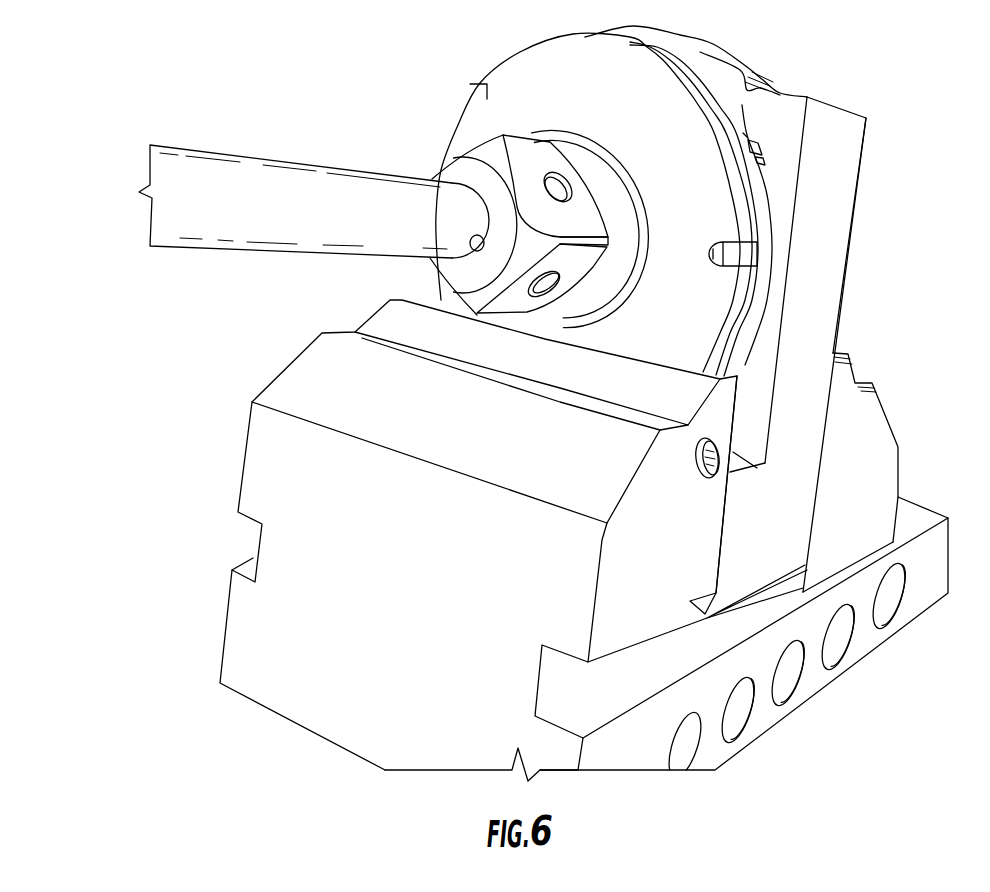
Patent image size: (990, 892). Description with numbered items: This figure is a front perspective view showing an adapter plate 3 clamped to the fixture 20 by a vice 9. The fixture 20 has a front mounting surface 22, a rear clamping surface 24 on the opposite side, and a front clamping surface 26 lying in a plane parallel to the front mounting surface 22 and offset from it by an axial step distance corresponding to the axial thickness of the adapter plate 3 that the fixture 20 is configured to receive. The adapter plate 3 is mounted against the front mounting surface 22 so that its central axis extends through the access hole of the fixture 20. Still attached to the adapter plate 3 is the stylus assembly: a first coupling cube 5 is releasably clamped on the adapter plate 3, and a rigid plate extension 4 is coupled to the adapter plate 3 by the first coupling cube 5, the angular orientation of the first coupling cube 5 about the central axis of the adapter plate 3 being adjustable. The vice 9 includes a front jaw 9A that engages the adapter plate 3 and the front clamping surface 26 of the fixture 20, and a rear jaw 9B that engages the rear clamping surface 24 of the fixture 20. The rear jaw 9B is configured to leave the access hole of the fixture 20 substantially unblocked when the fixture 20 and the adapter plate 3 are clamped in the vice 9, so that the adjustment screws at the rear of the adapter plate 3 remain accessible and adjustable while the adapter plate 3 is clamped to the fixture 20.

The adapter plate 3 is at (532, 68).
The plate extension 4 is at (303, 167).
The first coupling cube 5 is at (477, 152).
The vice 9 is at (951, 552).
The front jaw 9A is at (663, 516).
The rear jaw 9B is at (866, 427).
The fixture 20 is at (858, 199).
The front mounting surface 22 is at (768, 297).
The rear clamping surface 24 is at (850, 272).
The front clamping surface 26 is at (720, 533).